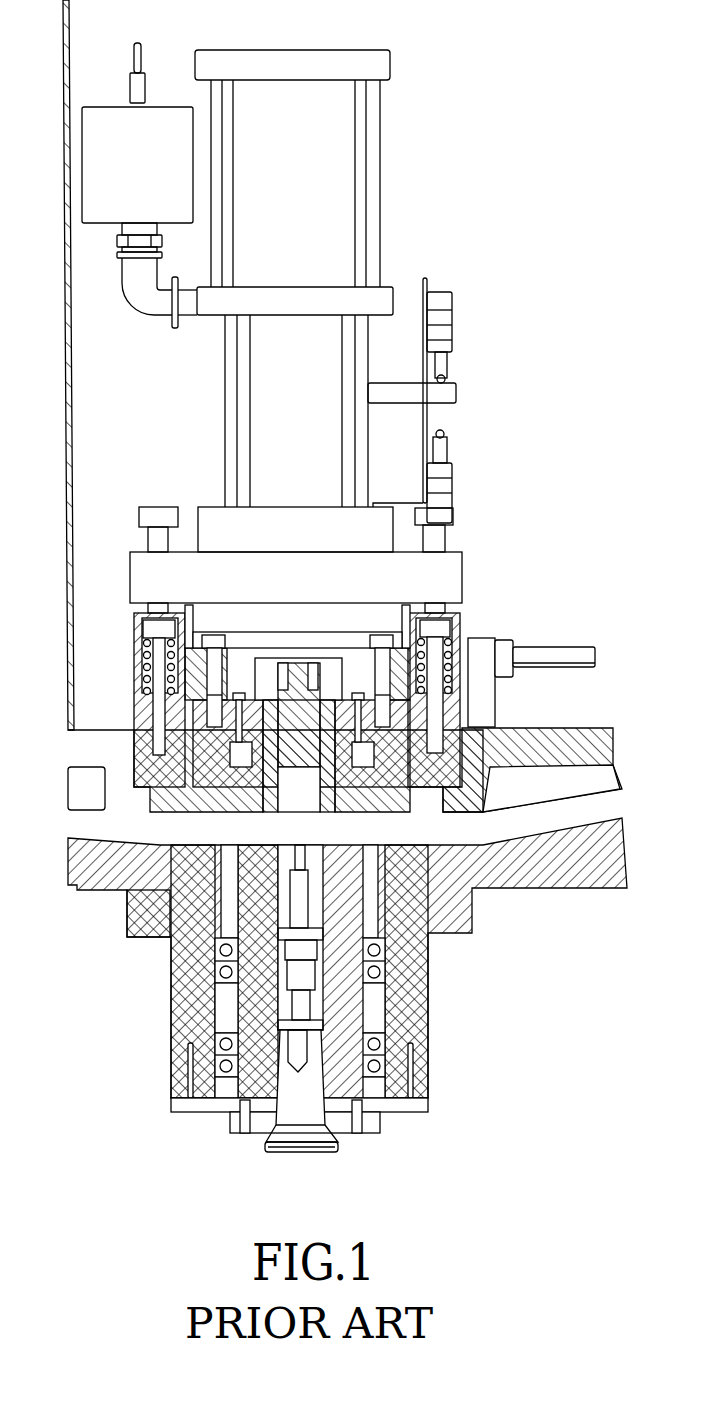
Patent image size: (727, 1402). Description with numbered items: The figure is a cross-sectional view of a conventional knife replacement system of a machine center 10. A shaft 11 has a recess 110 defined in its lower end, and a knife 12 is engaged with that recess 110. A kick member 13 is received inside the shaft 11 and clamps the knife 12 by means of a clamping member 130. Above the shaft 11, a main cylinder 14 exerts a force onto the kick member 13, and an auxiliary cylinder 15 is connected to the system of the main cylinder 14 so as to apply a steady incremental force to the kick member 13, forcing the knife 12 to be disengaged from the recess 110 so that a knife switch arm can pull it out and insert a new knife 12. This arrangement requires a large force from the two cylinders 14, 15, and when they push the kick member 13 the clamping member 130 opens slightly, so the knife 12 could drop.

The machine center 10 is at (497, 577).
The shaft 11 is at (467, 972).
The knife 12 is at (334, 1159).
The kick member 13 is at (293, 952).
The main cylinder 14 is at (413, 247).
The auxiliary cylinder 15 is at (473, 373).
The recess 110 is at (296, 1080).
The clamping member 130 is at (280, 998).